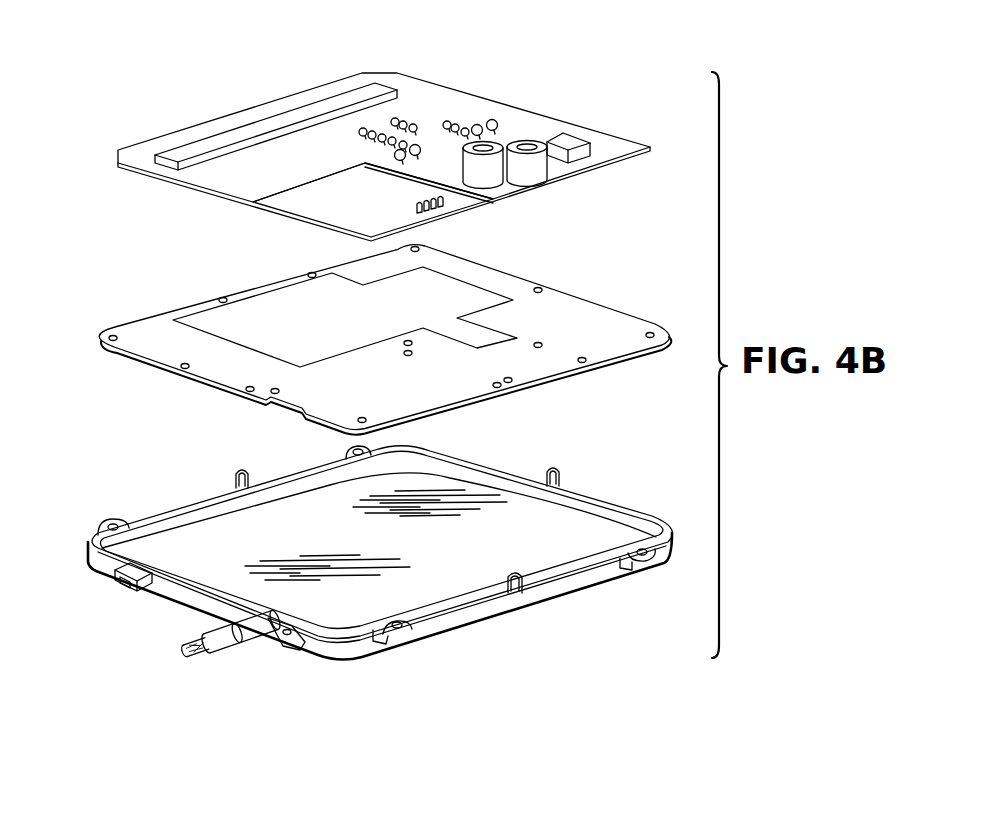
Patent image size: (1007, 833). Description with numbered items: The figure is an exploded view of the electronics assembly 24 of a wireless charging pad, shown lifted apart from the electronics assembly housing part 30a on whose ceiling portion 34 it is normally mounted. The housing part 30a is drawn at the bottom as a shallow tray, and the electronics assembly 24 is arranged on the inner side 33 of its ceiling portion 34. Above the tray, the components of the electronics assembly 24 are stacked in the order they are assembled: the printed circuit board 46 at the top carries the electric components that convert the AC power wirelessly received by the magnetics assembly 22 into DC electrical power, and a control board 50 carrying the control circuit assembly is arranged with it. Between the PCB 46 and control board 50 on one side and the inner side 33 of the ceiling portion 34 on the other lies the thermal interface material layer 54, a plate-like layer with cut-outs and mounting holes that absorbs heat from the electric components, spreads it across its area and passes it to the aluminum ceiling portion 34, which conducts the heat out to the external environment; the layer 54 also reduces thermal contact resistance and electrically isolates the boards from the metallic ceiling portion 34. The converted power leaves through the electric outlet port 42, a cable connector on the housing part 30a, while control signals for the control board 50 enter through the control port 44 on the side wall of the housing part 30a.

The magnetics assembly 22 is at (457, 632).
The electronics assembly 24 is at (97, 84).
The electronics assembly housing part 30a is at (157, 512).
The inner side 33 is at (232, 585).
The ceiling portion 34 is at (545, 590).
The electric outlet port 42 is at (257, 649).
The control port 44 is at (118, 590).
The printed circuit board 46 is at (393, 78).
The control board 50 is at (333, 207).
The thermal interface material layer 54 is at (577, 292).